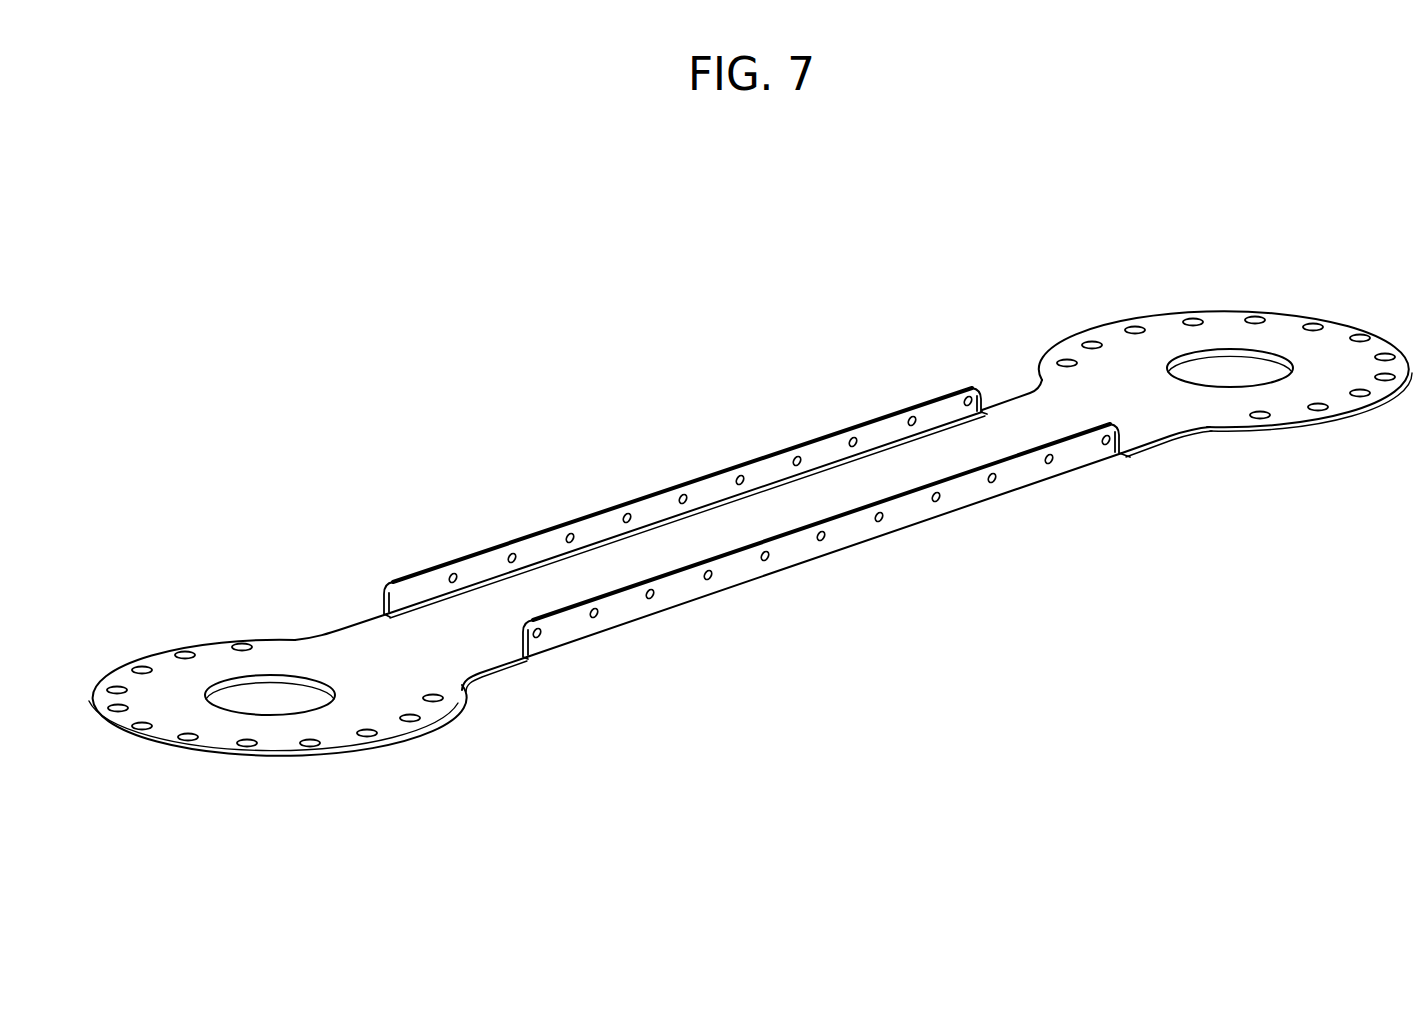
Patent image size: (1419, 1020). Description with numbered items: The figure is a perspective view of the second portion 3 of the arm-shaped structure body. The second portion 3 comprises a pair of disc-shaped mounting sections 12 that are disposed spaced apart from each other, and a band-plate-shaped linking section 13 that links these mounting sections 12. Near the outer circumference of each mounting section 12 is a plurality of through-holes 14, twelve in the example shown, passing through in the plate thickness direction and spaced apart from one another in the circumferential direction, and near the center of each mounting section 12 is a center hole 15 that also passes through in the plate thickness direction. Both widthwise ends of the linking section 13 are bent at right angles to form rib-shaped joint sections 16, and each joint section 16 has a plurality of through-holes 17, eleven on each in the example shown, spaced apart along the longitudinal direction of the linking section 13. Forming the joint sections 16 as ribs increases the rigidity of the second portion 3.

The second portion 3 is at (750, 537).
The mounting section 12 is at (300, 637).
The linking section 13 is at (820, 474).
The through-hole 14 is at (172, 732).
The center hole 15 is at (268, 706).
The joint section 16 is at (882, 430).
The through-hole 17 is at (455, 577).